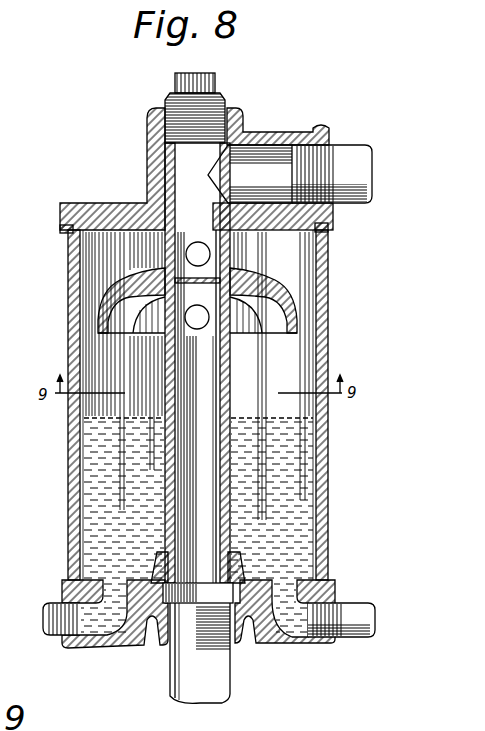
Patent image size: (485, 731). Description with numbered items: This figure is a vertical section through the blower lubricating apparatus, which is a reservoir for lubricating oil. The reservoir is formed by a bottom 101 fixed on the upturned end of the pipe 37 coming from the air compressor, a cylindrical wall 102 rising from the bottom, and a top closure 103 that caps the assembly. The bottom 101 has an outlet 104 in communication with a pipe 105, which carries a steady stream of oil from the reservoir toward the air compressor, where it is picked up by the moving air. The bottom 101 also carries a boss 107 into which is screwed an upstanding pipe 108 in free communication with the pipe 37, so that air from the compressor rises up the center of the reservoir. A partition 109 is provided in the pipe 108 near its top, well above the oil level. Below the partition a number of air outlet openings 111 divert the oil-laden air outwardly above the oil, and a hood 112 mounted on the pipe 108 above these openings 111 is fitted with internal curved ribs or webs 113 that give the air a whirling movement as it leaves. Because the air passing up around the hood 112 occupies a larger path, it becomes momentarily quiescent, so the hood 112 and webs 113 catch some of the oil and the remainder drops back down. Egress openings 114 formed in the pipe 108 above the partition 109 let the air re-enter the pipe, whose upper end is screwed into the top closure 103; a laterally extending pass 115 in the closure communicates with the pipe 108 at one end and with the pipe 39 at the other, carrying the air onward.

The top closure 103 is at (95, 206).
The laterally extending pass 115 is at (246, 158).
The pipe 39 is at (338, 152).
The egress openings 114 is at (228, 257).
The partition 109 is at (230, 280).
The hood 112 is at (117, 298).
The air outlet openings 111 is at (233, 320).
The internal curved ribs or webs 113 is at (147, 322).
The upstanding pipe 108 is at (230, 467).
The cylindrical wall 102 is at (70, 468).
The boss 107 is at (241, 562).
The bottom 101 is at (124, 633).
The pipe 37 is at (190, 686).
The outlet 104 is at (292, 633).
The pipe 105 is at (355, 626).